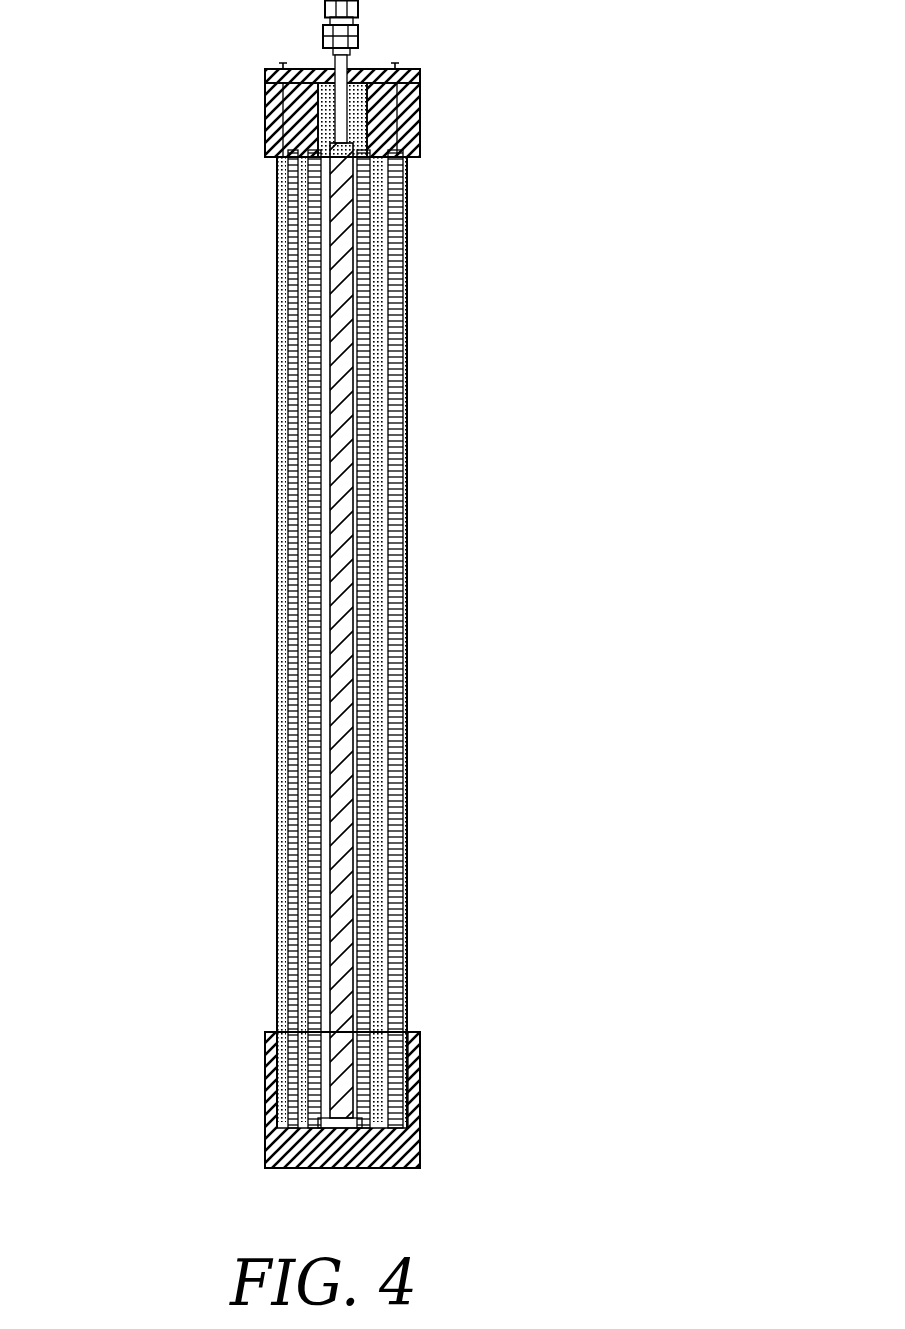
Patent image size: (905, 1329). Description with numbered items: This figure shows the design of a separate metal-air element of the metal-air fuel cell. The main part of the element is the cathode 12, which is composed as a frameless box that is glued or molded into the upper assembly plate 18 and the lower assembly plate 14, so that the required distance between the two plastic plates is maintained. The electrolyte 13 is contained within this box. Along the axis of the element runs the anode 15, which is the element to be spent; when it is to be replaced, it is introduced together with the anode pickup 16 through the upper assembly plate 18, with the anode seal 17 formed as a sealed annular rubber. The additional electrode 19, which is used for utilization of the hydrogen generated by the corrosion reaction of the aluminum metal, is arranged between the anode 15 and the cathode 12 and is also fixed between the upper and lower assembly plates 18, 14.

The cathode 12 is at (407, 570).
The electrolyte 13 is at (407, 955).
The lower assembly plate 14 is at (418, 1152).
The anode 15 is at (407, 760).
The anode pickup 16 is at (347, 68).
The anode seal 17 is at (388, 118).
The upper assembly plate 18 is at (263, 130).
The additional electrode 19 is at (278, 300).